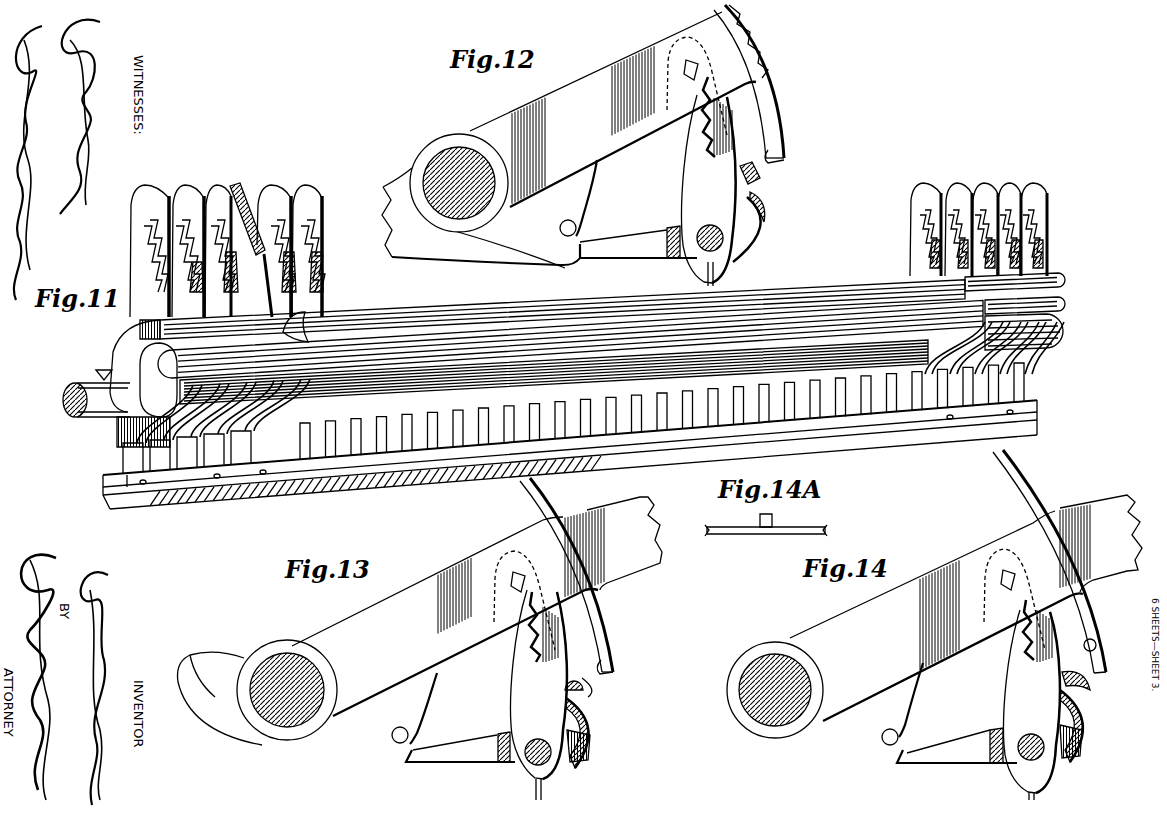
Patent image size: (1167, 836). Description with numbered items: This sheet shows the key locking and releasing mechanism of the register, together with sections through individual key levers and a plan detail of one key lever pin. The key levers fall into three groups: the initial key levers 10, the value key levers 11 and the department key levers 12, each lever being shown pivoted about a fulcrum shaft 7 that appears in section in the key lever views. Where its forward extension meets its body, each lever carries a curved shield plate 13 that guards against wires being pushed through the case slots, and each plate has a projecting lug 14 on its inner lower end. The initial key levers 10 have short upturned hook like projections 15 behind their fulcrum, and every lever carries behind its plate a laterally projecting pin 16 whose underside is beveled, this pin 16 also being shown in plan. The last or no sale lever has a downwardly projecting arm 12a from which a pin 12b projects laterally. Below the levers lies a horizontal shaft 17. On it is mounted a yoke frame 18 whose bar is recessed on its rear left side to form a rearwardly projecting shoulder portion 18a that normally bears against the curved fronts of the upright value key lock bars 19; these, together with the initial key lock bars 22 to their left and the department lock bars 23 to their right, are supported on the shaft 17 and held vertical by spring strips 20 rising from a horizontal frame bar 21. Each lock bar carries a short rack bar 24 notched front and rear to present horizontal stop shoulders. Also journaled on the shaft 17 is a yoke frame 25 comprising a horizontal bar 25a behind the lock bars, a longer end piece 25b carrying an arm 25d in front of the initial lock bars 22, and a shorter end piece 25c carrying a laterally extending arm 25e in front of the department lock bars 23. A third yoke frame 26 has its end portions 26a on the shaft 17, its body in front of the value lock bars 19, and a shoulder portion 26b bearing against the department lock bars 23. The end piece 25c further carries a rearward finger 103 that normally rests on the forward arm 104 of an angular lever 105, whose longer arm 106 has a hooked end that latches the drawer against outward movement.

In FIG. 12, the main shaft 7 is at (443, 157).
In FIG. 13, the main shaft 7 is at (290, 660).
In FIG. 14, the main shaft 7 is at (742, 680).
In FIG. 13, the initial key levers 10 is at (462, 650).
In FIG. 14, the value key levers 11 is at (862, 612).
In FIG. 12, the department key levers 12 is at (570, 88).
In FIG. 12, the downwardly projecting arm 12a is at (588, 190).
In FIG. 13, the downwardly projecting arm 12a is at (416, 700).
In FIG. 14, the downwardly projecting arm 12a is at (908, 690).
In FIG. 12, the pin 12b is at (578, 226).
In FIG. 13, the pin 12b is at (390, 736).
In FIG. 14, the pin 12b is at (880, 738).
In FIG. 12, the curved shield plate 13 is at (772, 105).
In FIG. 13, the curved shield plate 13 is at (598, 606).
In FIG. 14, the curved shield plate 13 is at (1095, 602).
In FIG. 12, the projecting lug 14 is at (786, 158).
In FIG. 13, the projecting lug 14 is at (614, 667).
In FIG. 14, the projecting lug 14 is at (1097, 647).
In FIG. 13, the hook like projections 15 is at (195, 672).
In FIG. 12, the laterally projecting pin 16 is at (655, 54).
In FIG. 13, the laterally projecting pin 16 is at (492, 560).
In FIG. 14, the laterally projecting pin 16 is at (982, 558).
In FIG. 14A, the laterally projecting pin 16 is at (772, 518).
In FIG. 11, the horizontal shaft 17 is at (64, 408).
In FIG. 12, the horizontal shaft 17 is at (724, 240).
In FIG. 13, the horizontal shaft 17 is at (554, 758).
In FIG. 14, the horizontal shaft 17 is at (1046, 754).
In FIG. 11, the yoke frame 18 is at (388, 332).
In FIG. 13, the yoke frame 18 is at (600, 726).
In FIG. 14, the yoke frame 18 is at (1092, 720).
In FIG. 11, the rearwardly projecting shoulder portion 18a is at (310, 322).
In FIG. 11, the value key lock bars 19 is at (280, 205).
In FIG. 11, the spring strips 20 is at (286, 478).
In FIG. 12, the spring strips 20 is at (716, 280).
In FIG. 11, the horizontal frame bar 21 is at (362, 492).
In FIG. 11, the initial key lock bars 22 is at (138, 216).
In FIG. 11, the department lock bars 23 is at (952, 186).
In FIG. 11, the short rack bar 24 is at (150, 250).
In FIG. 12, the short rack bar 24 is at (705, 140).
In FIG. 13, the short rack bar 24 is at (540, 662).
In FIG. 14, the short rack bar 24 is at (1030, 652).
In FIG. 11, the yoke frame 25 is at (112, 360).
In FIG. 11, the horizontal bar 25a is at (200, 320).
In FIG. 12, the horizontal bar 25a is at (668, 258).
In FIG. 13, the horizontal bar 25a is at (498, 760).
In FIG. 14, the horizontal bar 25a is at (990, 762).
In FIG. 11, the end piece 25b is at (126, 340).
In FIG. 11, the end piece 25c is at (1066, 334).
In FIG. 12, the end piece 25c is at (770, 230).
In FIG. 13, the arm 25d is at (592, 684).
In FIG. 11, the laterally extending arm 25e is at (1058, 306).
In FIG. 12, the laterally extending arm 25e is at (770, 204).
In FIG. 11, the yoke frame 26 is at (500, 303).
In FIG. 14, the yoke frame 26 is at (1092, 688).
In FIG. 11, the end portions 26a is at (290, 406).
In FIG. 11, the rearwardly projecting shoulder portion 26b is at (1042, 274).
In FIG. 12, the rearwardly projecting shoulder portion 26b is at (760, 172).
In FIG. 12, the rearward extension or finger 103 is at (650, 242).
In FIG. 13, the rearward extension or finger 103 is at (466, 748).
In FIG. 14, the rearward extension or finger 103 is at (948, 745).
In FIG. 12, the downwardly and forwardly extending arm 104 is at (570, 266).
In FIG. 12, the angular lever 105 is at (432, 235).
In FIG. 11, the rearwardly and downwardly extending longer arm 106 is at (290, 210).